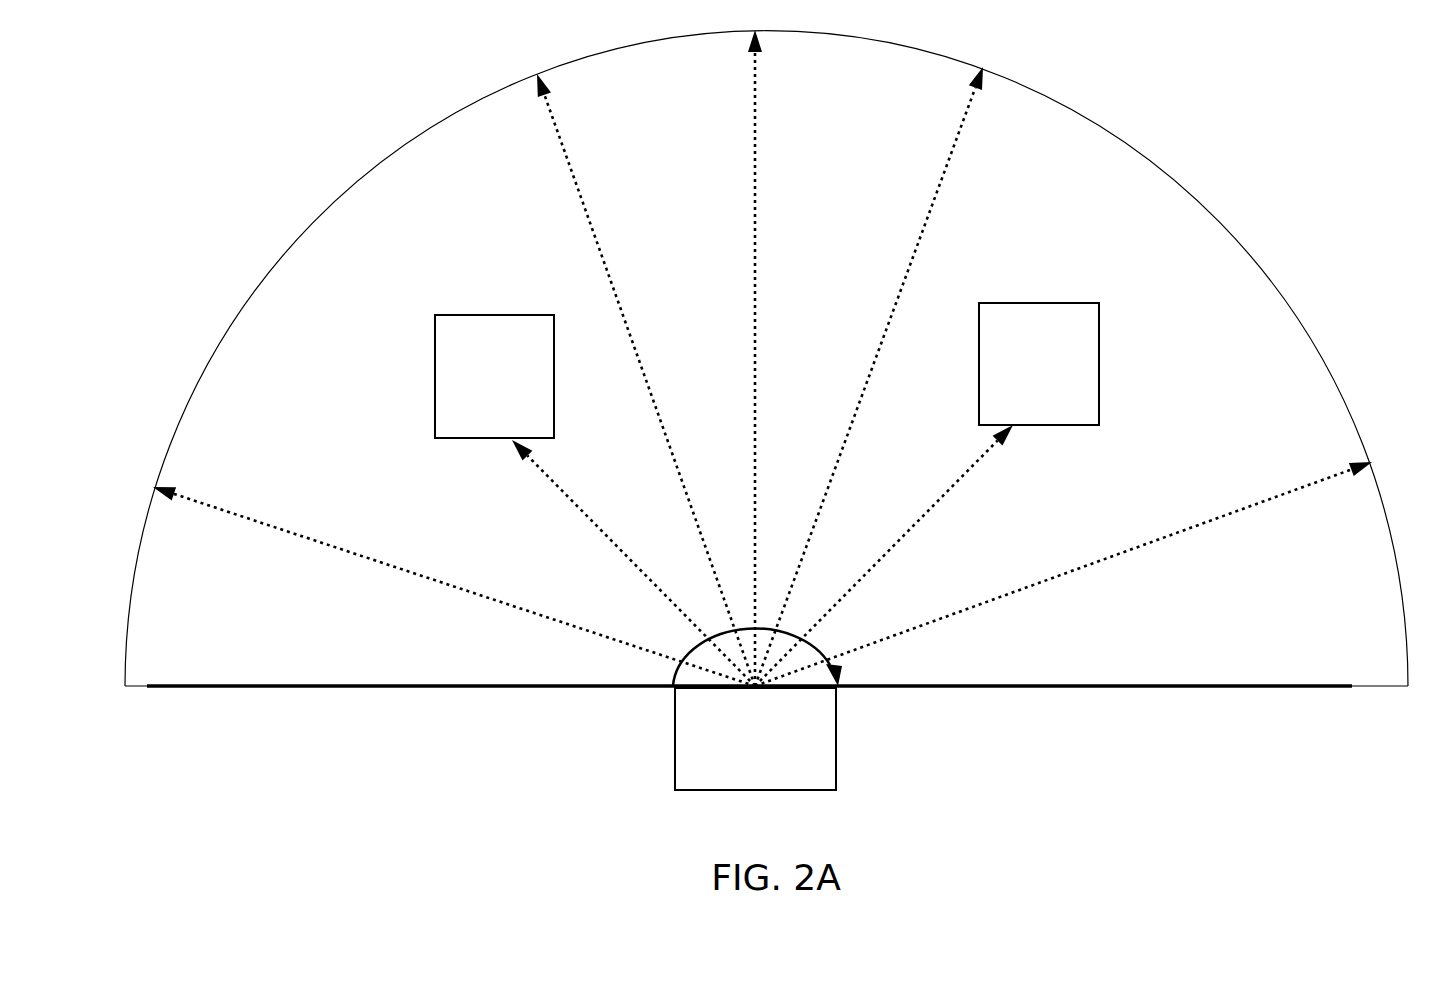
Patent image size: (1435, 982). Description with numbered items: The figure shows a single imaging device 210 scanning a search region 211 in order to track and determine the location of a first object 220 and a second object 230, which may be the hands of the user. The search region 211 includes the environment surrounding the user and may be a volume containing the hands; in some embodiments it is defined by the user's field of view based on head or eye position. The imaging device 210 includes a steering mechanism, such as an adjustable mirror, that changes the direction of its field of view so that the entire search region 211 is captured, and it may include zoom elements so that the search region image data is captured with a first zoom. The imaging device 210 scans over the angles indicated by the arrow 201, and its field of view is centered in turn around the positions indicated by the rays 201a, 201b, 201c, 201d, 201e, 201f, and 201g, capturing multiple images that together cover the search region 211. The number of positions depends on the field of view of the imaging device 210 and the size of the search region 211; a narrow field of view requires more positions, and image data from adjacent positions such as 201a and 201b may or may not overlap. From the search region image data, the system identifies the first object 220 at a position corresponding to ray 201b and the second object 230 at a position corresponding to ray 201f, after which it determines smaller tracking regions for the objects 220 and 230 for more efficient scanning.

The arrow 201 is at (784, 657).
The ray 201a is at (454, 586).
The ray 201b is at (633, 563).
The ray 201c is at (615, 380).
The ray 201d is at (721, 358).
The ray 201e is at (900, 376).
The ray 201f is at (884, 546).
The ray 201g is at (1070, 574).
The imaging device 210 is at (755, 739).
The search region 211 is at (310, 220).
The first object 220 is at (494, 376).
The second object 230 is at (1039, 364).